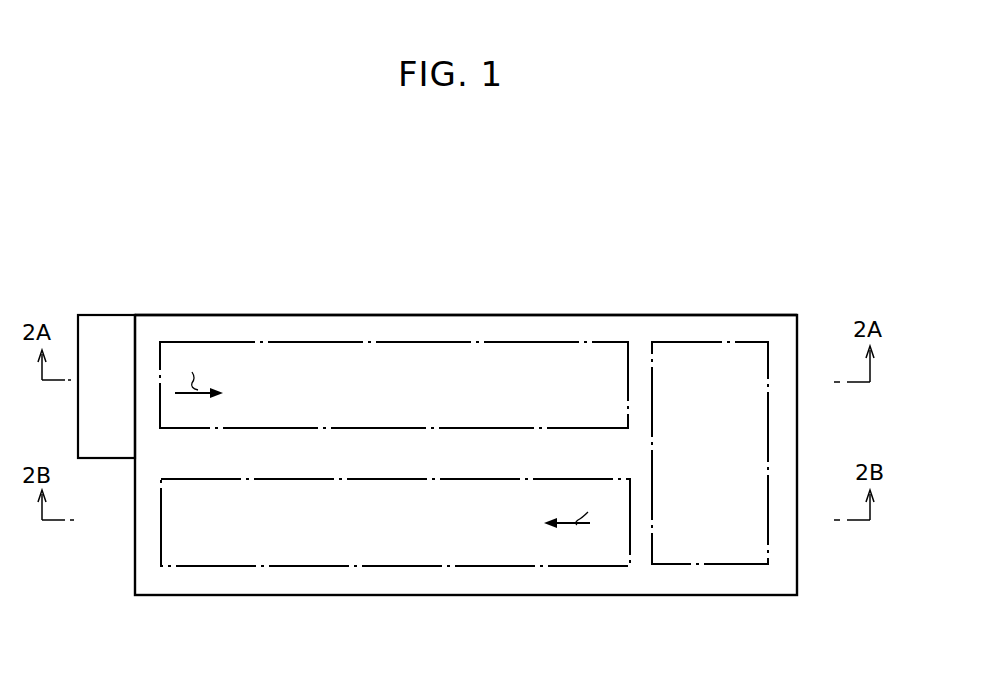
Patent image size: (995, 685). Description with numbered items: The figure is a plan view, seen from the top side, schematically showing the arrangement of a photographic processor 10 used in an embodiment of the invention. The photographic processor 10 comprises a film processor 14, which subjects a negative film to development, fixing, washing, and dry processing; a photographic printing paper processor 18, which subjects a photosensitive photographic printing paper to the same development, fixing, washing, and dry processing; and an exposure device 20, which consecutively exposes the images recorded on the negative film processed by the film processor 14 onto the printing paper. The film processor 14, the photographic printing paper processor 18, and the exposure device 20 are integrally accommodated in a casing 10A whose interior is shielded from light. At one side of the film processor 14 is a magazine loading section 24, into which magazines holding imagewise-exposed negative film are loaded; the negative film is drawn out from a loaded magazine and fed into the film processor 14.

The photographic processor 10 is at (575, 272).
The casing 10A is at (627, 314).
The film processor 14 is at (345, 342).
The photographic printing paper processor 18 is at (392, 566).
The exposure device 20 is at (768, 440).
The magazine loading section 24 is at (120, 315).